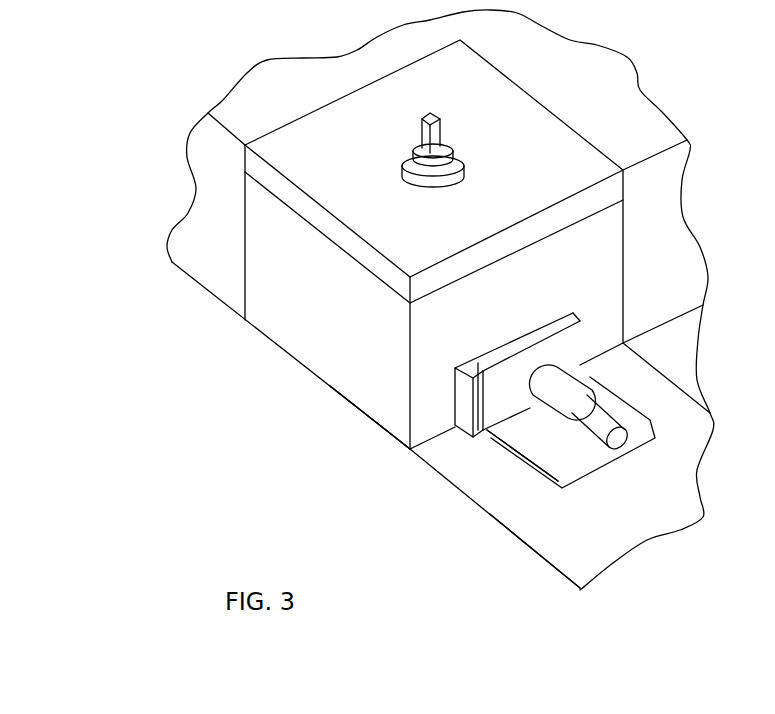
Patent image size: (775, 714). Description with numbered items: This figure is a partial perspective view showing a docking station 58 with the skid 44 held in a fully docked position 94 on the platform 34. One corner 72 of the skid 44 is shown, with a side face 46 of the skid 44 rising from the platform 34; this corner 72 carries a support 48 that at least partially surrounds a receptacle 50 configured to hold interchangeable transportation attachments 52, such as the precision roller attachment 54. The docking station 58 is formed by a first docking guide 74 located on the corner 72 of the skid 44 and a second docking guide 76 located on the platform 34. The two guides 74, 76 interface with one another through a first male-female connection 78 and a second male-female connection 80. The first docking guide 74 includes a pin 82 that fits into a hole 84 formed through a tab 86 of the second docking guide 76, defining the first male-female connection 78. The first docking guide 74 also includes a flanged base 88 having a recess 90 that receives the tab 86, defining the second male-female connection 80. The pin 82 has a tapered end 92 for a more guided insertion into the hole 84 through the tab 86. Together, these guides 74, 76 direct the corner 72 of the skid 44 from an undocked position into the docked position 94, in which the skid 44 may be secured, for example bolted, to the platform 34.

The platform 34 is at (505, 502).
The skid 44 is at (690, 95).
The right side face 46 is at (641, 192).
The support 48 is at (264, 300).
The receptacle 50 is at (292, 357).
The transportation attachment 52 is at (388, 444).
The precision roller attachment 54 is at (388, 444).
The docking station 58 is at (724, 318).
The corner 72 is at (362, 383).
The first docking guide 74 is at (568, 311).
The second docking guide 76 is at (577, 468).
The first male-female connection 78 is at (579, 360).
The second male-female connection 80 is at (486, 450).
The pin 82 is at (588, 374).
The hole 84 is at (490, 373).
The tab 86 is at (584, 322).
The flanged base 88 is at (463, 401).
The recess 90 is at (486, 368).
The tapered end 92 is at (640, 418).
The fully docked position 94 is at (529, 584).